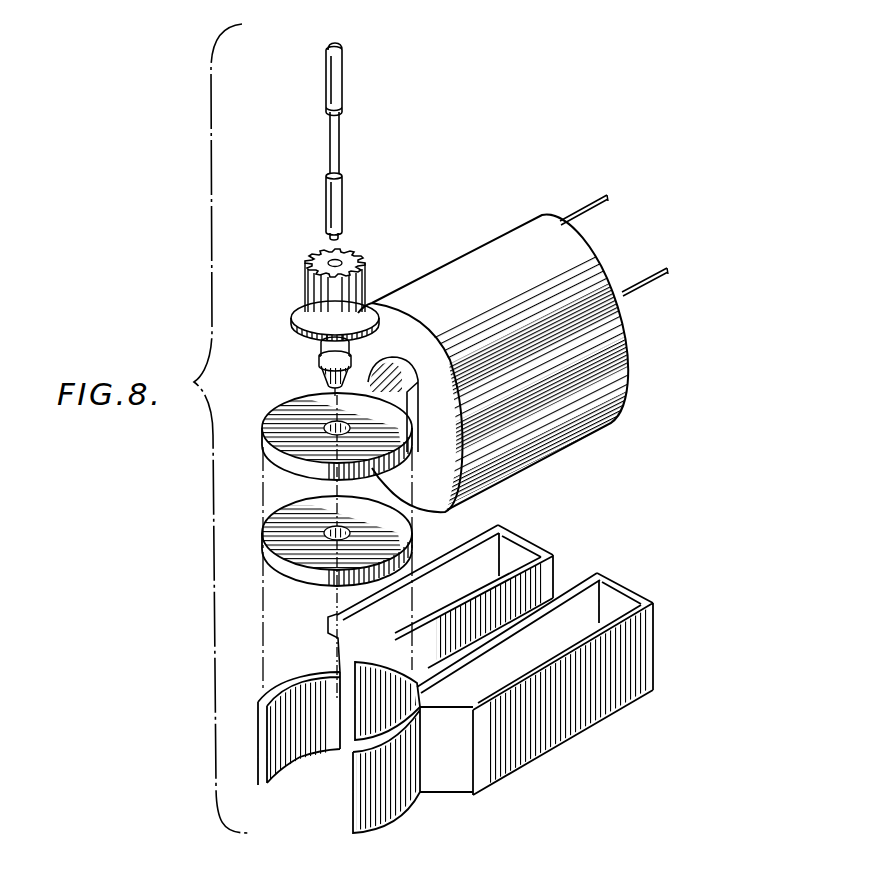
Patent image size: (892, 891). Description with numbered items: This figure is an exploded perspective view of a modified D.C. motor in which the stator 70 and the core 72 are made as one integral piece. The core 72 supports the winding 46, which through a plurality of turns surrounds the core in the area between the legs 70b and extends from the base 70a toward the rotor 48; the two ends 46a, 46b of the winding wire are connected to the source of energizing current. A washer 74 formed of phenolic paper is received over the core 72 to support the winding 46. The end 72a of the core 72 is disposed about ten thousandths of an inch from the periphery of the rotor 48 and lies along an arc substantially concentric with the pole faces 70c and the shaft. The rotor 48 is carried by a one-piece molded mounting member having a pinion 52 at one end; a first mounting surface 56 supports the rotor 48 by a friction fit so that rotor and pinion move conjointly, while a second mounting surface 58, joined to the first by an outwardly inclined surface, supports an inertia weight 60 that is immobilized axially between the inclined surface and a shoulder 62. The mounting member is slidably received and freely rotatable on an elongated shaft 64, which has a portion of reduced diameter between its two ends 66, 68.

The winding 46 is at (606, 364).
The wire end 46a is at (590, 200).
The wire end 46b is at (660, 267).
The rotor 48 is at (386, 446).
The pinion 52 is at (352, 258).
The first mounting surface 56 is at (322, 350).
The second mounting surface 58 is at (326, 362).
The inertia weight 60 is at (388, 529).
The shoulder 62 is at (330, 374).
The shaft 64 is at (340, 140).
The shaft end 66 is at (337, 92).
The shaft end 68 is at (338, 202).
The stator 70 is at (475, 673).
The base 70a is at (512, 528).
The legs 70b is at (620, 690).
The pole faces 70c is at (289, 755).
The core 72 is at (527, 659).
The core end 72a is at (370, 688).
The washer 74 is at (415, 356).